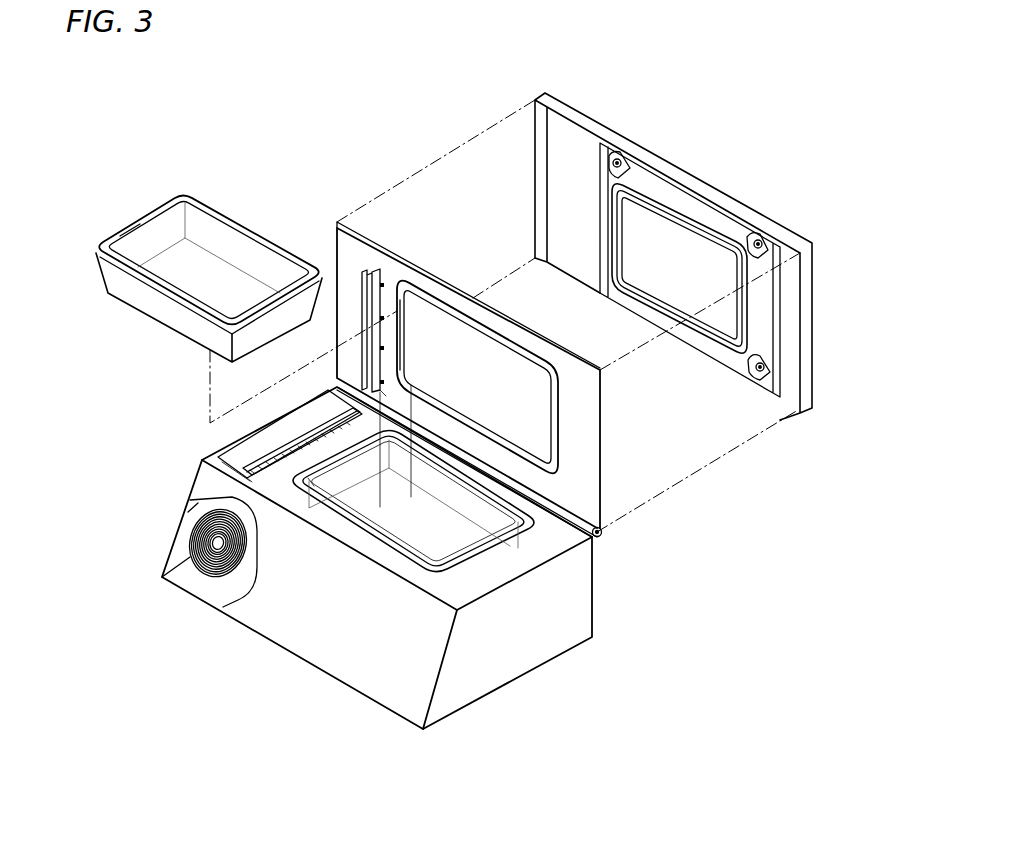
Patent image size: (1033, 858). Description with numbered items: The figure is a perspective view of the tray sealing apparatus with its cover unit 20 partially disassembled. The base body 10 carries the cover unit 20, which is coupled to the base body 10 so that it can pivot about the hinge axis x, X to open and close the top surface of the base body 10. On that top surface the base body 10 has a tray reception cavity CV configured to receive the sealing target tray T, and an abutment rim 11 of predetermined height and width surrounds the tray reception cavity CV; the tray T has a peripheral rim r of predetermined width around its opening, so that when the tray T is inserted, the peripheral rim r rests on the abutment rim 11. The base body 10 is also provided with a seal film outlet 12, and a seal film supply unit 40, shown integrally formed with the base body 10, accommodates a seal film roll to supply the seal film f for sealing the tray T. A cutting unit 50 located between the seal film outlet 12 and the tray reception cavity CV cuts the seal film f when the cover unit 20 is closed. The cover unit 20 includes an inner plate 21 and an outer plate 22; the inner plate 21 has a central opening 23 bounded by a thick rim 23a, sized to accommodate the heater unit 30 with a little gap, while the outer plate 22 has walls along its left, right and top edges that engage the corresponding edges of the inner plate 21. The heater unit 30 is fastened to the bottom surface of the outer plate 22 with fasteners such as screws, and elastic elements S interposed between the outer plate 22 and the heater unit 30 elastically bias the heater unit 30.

The base body 10 is at (360, 643).
The abutment rim 11 is at (543, 513).
The seal film outlet 12 is at (297, 438).
The cover unit 20 is at (393, 107).
The inner plate 21 is at (356, 236).
The outer plate 22 is at (537, 97).
The opening 23 is at (470, 350).
The thick rim 23a is at (427, 290).
The heater unit 30 is at (612, 180).
The seal film supply unit 40 is at (195, 582).
The cutting unit 50 is at (382, 393).
The sealing target tray T is at (138, 293).
The peripheral rim r is at (143, 216).
The seal film f is at (192, 507).
The hinge axis x is at (318, 373).
The hinge axis X is at (603, 537).
The elastic element S is at (625, 157).
The tray reception cavity CV is at (443, 550).